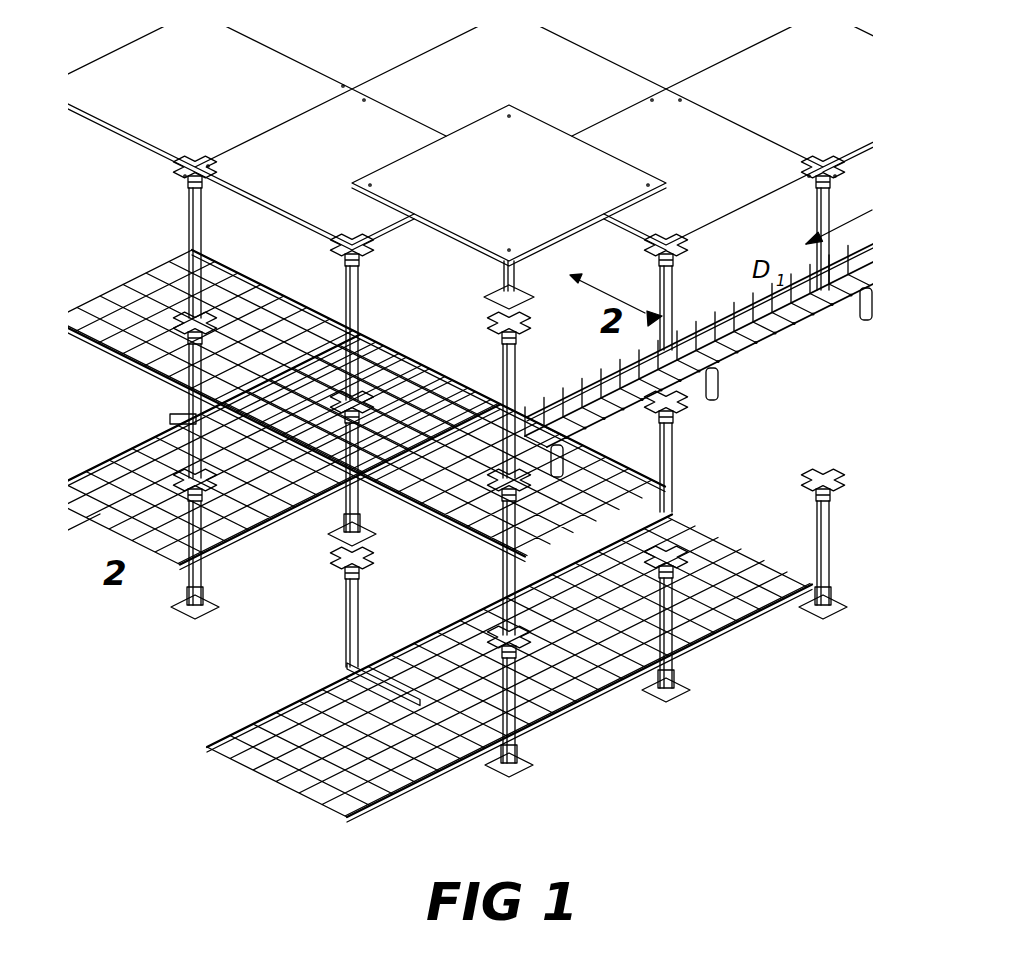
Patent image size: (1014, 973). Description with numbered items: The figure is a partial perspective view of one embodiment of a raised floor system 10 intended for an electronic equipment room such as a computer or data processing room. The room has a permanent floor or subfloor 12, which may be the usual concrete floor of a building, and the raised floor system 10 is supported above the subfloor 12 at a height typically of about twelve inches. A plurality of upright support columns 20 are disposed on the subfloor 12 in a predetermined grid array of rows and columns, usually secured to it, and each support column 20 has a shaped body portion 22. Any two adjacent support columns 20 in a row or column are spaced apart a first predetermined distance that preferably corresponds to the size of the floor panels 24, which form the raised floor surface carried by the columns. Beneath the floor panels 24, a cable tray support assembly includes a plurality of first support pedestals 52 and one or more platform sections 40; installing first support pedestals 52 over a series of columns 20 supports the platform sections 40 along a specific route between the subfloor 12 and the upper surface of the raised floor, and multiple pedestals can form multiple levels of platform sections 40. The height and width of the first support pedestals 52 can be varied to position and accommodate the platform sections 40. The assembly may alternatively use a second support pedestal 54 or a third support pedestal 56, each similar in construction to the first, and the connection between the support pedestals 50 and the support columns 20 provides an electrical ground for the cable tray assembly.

The raised floor system 10 is at (470, 106).
The subfloor 12 is at (463, 489).
The upright support columns 20 is at (537, 472).
The shaped body portion 22 is at (673, 318).
The floor panels 24 is at (482, 214).
The platform section 40 is at (790, 333).
The support pedestal 50 is at (200, 592).
The first support pedestals 52 is at (866, 322).
The second support pedestal 54 is at (565, 458).
The third support pedestal 56 is at (180, 420).